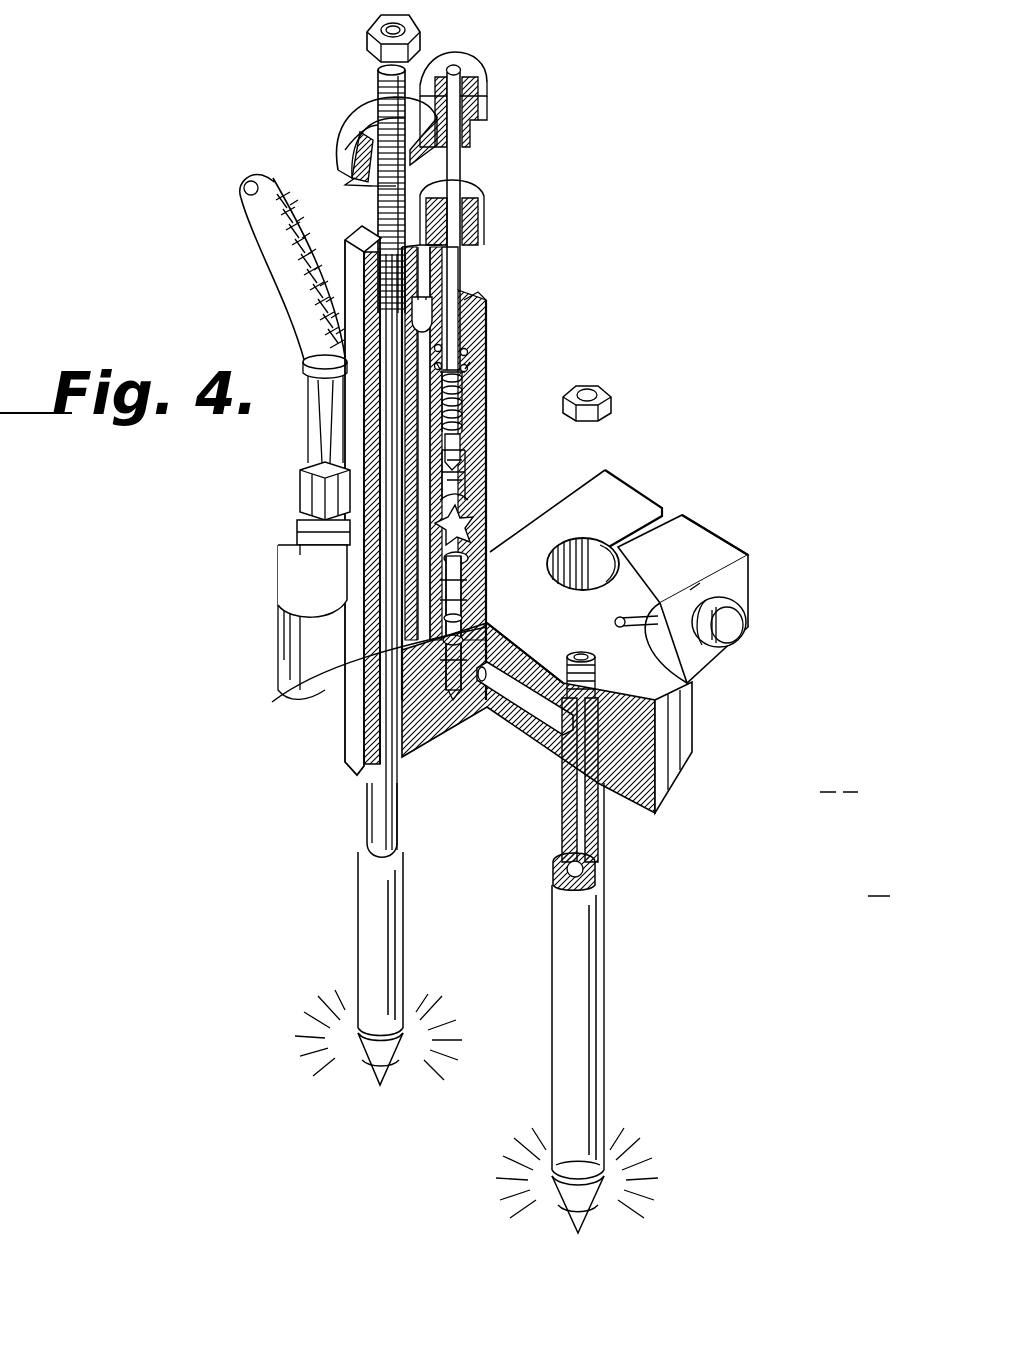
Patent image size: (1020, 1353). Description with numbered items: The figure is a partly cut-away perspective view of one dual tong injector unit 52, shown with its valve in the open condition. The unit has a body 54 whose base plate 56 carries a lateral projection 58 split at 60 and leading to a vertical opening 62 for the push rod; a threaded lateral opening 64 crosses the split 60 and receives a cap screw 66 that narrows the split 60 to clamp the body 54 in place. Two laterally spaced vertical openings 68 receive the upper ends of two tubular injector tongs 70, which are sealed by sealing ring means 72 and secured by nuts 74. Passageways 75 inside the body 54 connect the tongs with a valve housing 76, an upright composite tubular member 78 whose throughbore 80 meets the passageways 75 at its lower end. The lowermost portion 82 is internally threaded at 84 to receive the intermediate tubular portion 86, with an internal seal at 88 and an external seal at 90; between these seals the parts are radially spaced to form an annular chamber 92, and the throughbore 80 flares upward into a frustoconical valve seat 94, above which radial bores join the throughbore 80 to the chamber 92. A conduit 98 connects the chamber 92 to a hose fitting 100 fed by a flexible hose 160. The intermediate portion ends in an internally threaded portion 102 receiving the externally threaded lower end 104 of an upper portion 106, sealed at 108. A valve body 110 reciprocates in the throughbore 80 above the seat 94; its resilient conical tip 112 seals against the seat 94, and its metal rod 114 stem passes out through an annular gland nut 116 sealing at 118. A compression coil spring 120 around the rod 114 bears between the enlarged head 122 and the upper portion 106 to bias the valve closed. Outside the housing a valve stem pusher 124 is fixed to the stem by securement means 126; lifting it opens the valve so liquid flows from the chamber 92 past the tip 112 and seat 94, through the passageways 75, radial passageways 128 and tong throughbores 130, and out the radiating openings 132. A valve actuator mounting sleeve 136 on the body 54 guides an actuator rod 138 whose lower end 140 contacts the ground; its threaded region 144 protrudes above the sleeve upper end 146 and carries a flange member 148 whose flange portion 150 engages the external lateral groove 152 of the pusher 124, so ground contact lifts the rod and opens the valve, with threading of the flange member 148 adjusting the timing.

The dual tong injector unit 52 is at (240, 590).
The body 54 is at (612, 492).
The base plate 56 is at (296, 646).
The lateral projection 58 is at (708, 540).
The split 60 is at (655, 520).
The vertical opening 62 is at (608, 578).
The threaded lateral opening 64 is at (730, 603).
The cap screw 66 is at (738, 624).
The vertical openings 68 is at (562, 775).
The tubular injector tongs 70 is at (406, 908).
The sealing ring means 72 is at (712, 760).
The nuts 74 is at (612, 406).
The passageways 75 is at (452, 722).
The valve housing 76 is at (492, 600).
The composite tubular member 78 is at (490, 578).
The throughbore 80 is at (480, 632).
The lowermost portion 82 is at (490, 650).
The internal threads 84 is at (470, 612).
The intermediate tubular portion 86 is at (488, 458).
The internal seal 88 is at (353, 671).
The external seal 90 is at (487, 477).
The annular chamber 92 is at (476, 498).
The frustoconical valve seat 94 is at (470, 550).
The conduit 98 is at (310, 556).
The hose fitting 100 is at (312, 502).
The internally threaded portion 102 is at (487, 308).
The externally threaded lower end 104 is at (470, 338).
The upper portion 106 is at (487, 270).
The seal 108 is at (470, 358).
The valve body 110 is at (462, 164).
The conical tip 112 is at (470, 520).
The metal rod 114 is at (464, 388).
The annular gland nut 116 is at (486, 214).
The rod seal 118 is at (480, 238).
The compression coil spring 120 is at (466, 412).
The enlarged head 122 is at (462, 440).
The valve stem pusher 124 is at (480, 122).
The securement means 126 is at (480, 96).
The radial passageways 128 is at (540, 735).
The throughbores 130 is at (582, 822).
The radiating openings 132 is at (606, 1168).
The valve actuator mounting sleeve 136 is at (326, 400).
The actuator rod 138 is at (380, 788).
The lower end 140 is at (372, 862).
The threaded region 144 is at (378, 178).
The upper end 146 is at (372, 190).
The flange member 148 is at (352, 160).
The flange portion 150 is at (372, 105).
The external lateral groove 152 is at (462, 75).
The flexible hose 160 is at (288, 272).